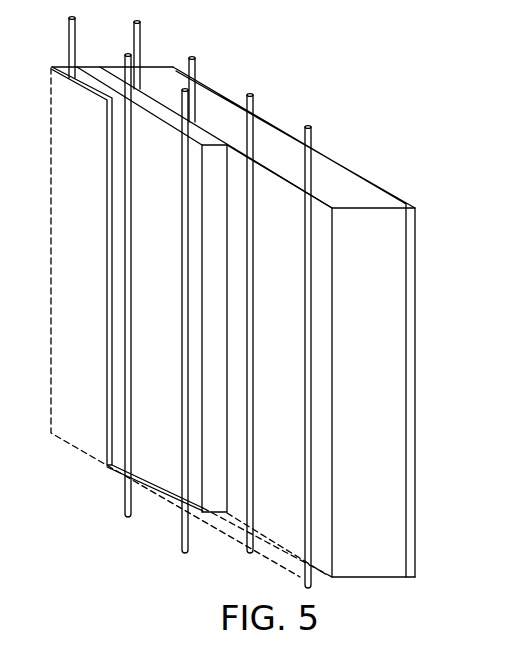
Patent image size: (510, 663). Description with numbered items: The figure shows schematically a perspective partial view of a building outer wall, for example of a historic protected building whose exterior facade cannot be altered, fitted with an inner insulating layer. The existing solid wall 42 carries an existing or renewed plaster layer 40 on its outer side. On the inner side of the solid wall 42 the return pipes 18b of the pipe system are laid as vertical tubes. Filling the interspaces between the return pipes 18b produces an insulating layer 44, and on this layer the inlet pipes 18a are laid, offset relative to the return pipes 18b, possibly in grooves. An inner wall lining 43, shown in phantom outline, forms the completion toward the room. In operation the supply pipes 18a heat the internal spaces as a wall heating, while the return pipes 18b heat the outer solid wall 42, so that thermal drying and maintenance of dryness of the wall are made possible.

The inlet pipes 18a is at (128, 519).
The return pipes 18b is at (192, 54).
The plaster layer 40 is at (412, 328).
The solid wall 42 is at (397, 425).
The inner wall lining 43 is at (78, 447).
The insulating layer 44 is at (218, 515).